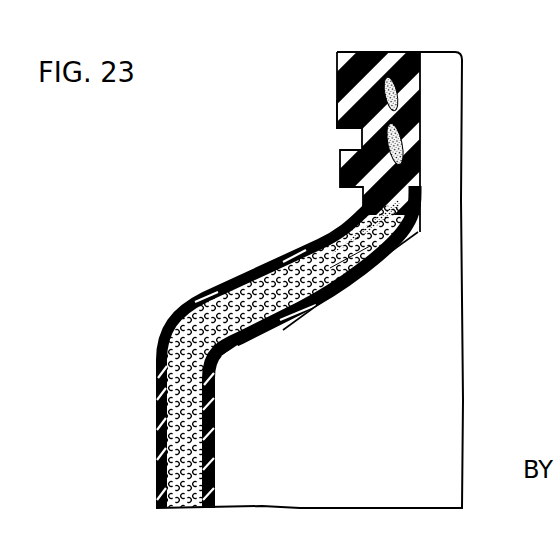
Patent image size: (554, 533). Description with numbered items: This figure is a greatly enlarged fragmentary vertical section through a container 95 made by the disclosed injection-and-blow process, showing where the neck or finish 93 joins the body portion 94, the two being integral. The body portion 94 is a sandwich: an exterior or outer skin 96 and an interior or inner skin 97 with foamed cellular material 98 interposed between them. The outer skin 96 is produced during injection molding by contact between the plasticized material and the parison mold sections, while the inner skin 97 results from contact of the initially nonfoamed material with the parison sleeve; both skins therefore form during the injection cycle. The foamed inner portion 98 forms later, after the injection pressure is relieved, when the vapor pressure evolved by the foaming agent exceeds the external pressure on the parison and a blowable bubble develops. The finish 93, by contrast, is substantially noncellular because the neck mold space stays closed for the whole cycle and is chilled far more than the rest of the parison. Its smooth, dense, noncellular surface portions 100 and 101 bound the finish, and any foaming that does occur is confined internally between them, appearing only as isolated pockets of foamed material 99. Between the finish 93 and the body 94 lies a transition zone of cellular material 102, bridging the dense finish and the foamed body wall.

The finish 93 is at (359, 50).
The body portion 94 is at (293, 329).
The container 95 is at (483, 56).
The exterior skin 96 is at (250, 282).
The inner skin 97 is at (320, 293).
The foamed cellular material 98 is at (185, 468).
The pockets of foamed material 99 is at (398, 90).
The noncellular surface portion 100 is at (337, 127).
The noncellular surface portion 101 is at (421, 152).
The transition zone of cellular material 102 is at (352, 262).